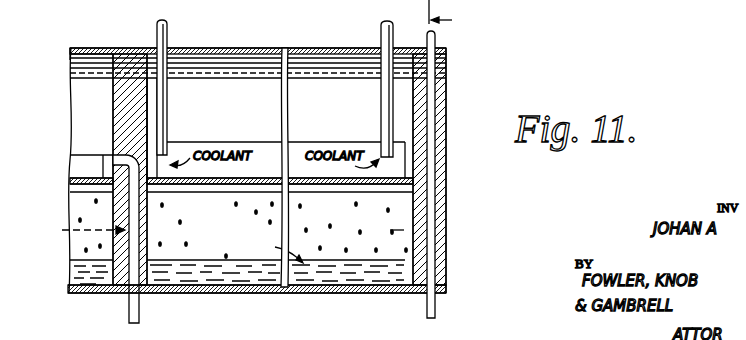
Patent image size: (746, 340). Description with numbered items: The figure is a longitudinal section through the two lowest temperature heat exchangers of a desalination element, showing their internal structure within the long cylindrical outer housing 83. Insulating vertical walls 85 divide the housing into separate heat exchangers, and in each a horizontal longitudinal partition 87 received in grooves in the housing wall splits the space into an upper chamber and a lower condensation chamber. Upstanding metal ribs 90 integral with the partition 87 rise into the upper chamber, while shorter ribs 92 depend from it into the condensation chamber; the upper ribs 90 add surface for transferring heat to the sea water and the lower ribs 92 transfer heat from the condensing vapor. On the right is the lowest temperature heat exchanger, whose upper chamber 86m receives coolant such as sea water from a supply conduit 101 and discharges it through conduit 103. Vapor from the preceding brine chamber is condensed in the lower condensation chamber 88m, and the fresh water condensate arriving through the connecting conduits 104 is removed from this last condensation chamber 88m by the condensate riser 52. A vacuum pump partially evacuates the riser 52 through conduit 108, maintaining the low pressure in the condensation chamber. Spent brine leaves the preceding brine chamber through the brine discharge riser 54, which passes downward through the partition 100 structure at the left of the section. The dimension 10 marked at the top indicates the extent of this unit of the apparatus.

The evaporator unit 10 is at (285, 0).
The condensate discharge riser 52 is at (437, 302).
The brine discharge riser 54 is at (128, 312).
The outer housing 83 is at (242, 47).
The insulating vertical wall 85 is at (129, 40).
The upper chamber 86m is at (311, 53).
The horizontal longitudinal partition 87 is at (329, 184).
The condensation chamber 88m is at (399, 242).
The upstanding metal rib 90 is at (80, 163).
The depending metal rib 92 is at (85, 193).
The end wall partition 100 is at (122, 100).
The supply conduit 101 is at (156, 28).
The outlet conduit 103 is at (380, 35).
The connecting conduit 104 is at (76, 232).
The vacuum conduit 108 is at (433, 96).